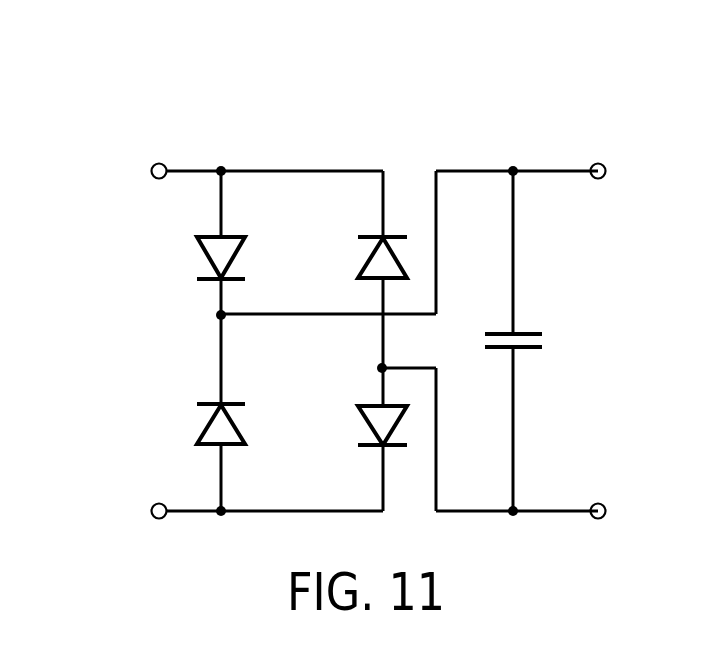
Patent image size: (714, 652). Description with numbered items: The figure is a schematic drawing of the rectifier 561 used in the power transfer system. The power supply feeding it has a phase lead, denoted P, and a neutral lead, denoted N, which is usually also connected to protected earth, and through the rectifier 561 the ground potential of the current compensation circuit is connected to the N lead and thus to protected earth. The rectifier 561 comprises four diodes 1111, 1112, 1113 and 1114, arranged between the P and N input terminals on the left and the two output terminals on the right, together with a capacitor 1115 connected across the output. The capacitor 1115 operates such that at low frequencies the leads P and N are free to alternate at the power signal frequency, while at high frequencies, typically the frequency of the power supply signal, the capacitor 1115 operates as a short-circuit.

The rectifier 561 is at (114, 128).
The diode 1111 is at (205, 262).
The diode 1112 is at (205, 428).
The diode 1113 is at (367, 254).
The diode 1114 is at (367, 427).
The capacitor 1115 is at (543, 343).